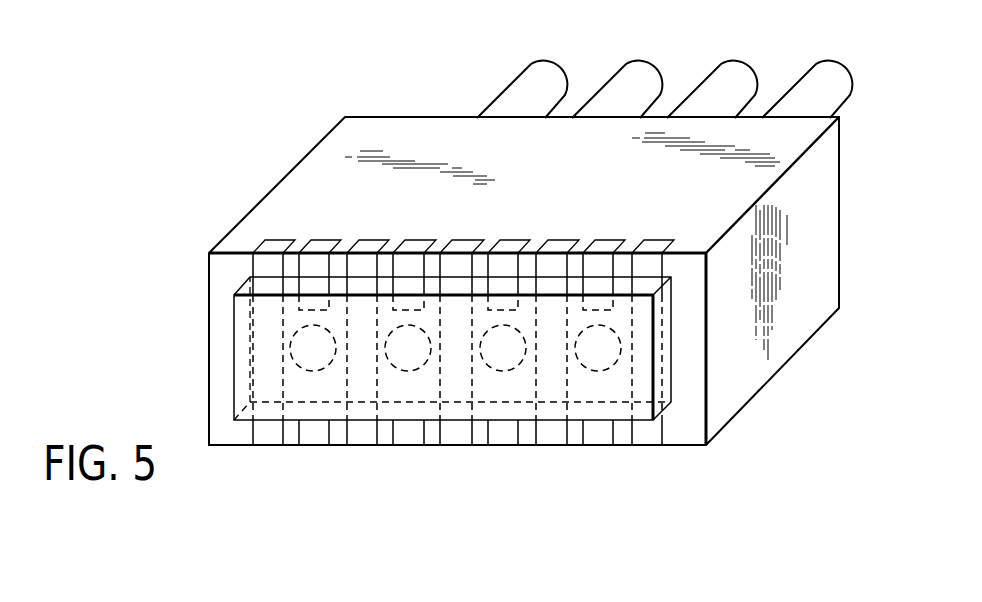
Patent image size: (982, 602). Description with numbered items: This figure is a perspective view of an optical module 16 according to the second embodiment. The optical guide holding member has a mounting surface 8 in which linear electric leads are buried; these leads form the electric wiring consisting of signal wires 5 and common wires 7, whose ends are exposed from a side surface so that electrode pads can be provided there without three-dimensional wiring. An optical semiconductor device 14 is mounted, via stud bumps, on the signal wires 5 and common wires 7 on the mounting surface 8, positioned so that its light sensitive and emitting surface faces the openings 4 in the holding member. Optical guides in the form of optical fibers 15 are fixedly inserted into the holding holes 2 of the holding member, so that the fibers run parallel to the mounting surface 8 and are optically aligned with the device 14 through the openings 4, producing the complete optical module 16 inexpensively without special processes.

The optical module 16 is at (355, 88).
The optical fibers 15 is at (548, 67).
The optical semiconductor device 14 is at (667, 382).
The mounting surface 8 is at (220, 303).
The common wires 7 is at (252, 265).
The signal wires 5 is at (297, 267).
The openings 4 is at (498, 367).
The holding holes 2 is at (598, 370).